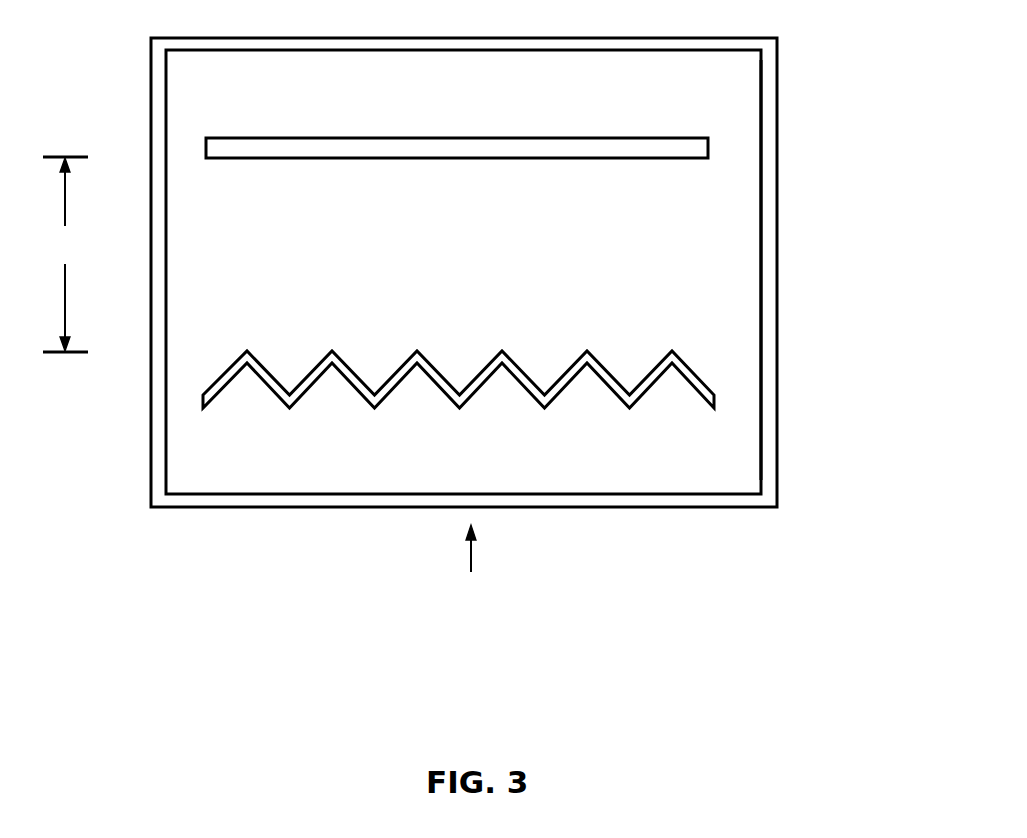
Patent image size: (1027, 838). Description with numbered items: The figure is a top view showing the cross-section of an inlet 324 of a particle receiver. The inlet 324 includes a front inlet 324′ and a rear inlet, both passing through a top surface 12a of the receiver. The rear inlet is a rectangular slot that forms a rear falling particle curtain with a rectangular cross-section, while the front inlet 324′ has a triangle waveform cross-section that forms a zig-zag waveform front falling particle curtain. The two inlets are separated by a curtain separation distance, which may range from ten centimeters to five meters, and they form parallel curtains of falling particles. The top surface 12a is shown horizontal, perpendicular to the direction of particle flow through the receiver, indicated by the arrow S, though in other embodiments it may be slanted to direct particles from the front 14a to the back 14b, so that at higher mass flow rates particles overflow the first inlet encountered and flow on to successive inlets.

The inlet 324 is at (470, 227).
The front inlet 324′ is at (690, 368).
The top surface 12a is at (747, 225).
The front 14a is at (733, 507).
The back 14b is at (737, 38).
The flow direction S is at (470, 568).